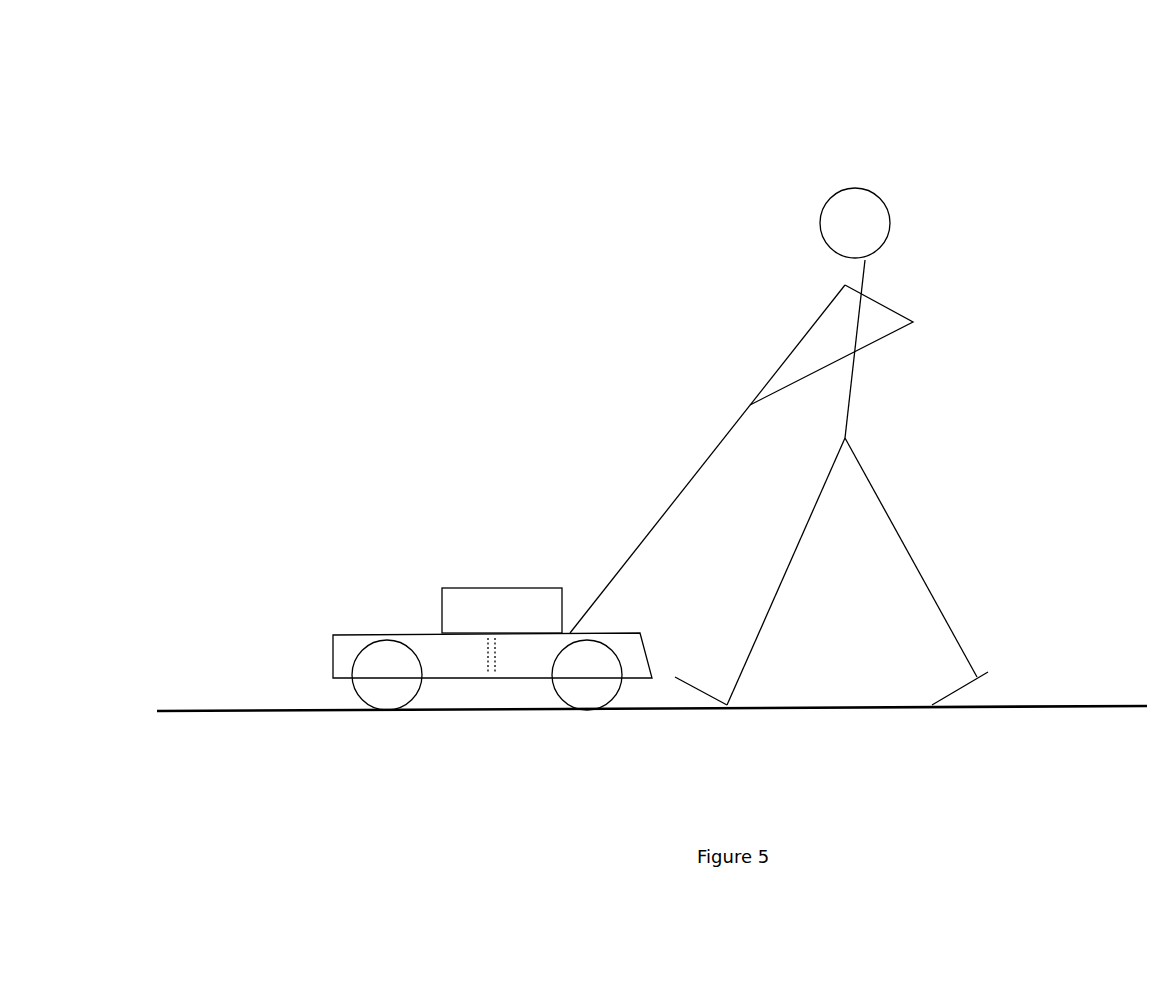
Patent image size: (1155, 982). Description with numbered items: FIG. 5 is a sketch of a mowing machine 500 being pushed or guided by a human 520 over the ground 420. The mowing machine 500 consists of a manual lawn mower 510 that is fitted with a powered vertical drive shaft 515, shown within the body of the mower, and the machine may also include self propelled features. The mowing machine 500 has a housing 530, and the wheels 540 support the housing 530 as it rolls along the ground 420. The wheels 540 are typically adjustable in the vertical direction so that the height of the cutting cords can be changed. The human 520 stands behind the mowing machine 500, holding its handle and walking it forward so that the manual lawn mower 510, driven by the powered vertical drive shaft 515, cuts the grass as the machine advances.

The ground surface 420 is at (307, 708).
The mowing machine 500 is at (419, 559).
The manual lawn mower 510 is at (441, 606).
The powered vertical drive shaft 515 is at (487, 657).
The human 520 is at (888, 210).
The housing 530 is at (335, 665).
The wheels 540 is at (363, 703).